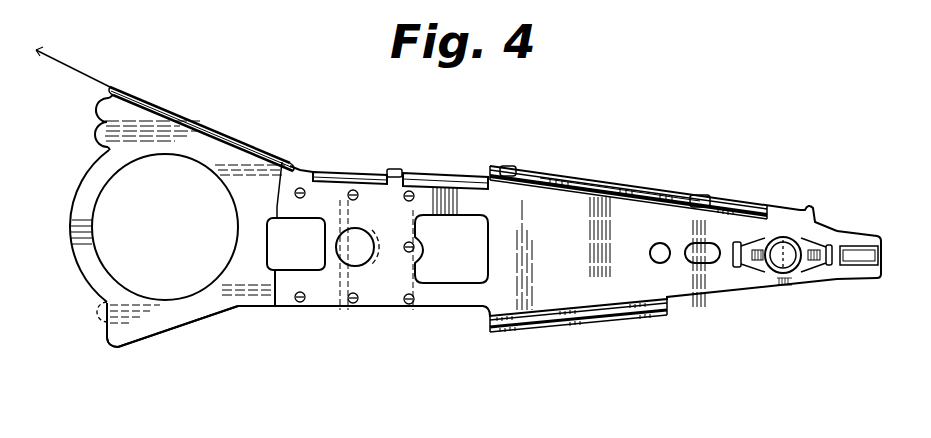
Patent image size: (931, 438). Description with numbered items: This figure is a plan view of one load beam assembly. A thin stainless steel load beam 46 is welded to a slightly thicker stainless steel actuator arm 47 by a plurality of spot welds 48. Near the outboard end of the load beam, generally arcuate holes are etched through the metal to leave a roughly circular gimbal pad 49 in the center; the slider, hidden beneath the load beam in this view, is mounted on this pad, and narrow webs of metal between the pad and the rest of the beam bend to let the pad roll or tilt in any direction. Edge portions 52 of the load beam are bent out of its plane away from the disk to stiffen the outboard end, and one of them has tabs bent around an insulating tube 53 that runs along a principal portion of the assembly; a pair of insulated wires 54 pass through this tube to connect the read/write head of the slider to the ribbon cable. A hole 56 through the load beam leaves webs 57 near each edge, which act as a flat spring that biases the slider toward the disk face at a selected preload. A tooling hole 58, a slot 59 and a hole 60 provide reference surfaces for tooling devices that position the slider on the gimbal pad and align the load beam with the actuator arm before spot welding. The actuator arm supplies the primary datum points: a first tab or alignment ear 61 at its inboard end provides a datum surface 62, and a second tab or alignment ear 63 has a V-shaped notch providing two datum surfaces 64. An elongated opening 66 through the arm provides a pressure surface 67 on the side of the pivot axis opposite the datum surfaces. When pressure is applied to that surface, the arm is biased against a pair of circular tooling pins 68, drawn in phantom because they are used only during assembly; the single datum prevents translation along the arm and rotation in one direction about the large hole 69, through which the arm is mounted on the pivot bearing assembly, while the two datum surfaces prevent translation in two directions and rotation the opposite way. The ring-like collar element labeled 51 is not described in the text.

The load beam 46 is at (543, 210).
The actuator arm 47 is at (200, 320).
The spot welds 48 is at (350, 193).
The gimbal pad 49 is at (783, 255).
The collar ring 51 is at (783, 240).
The edge portions 52 is at (610, 190).
The insulating tube 53 is at (462, 172).
The insulated wires 54 is at (103, 83).
The hole 56 is at (432, 270).
The webs 57 is at (423, 198).
The tooling hole 58 is at (352, 268).
The slot 59 is at (707, 265).
The hole 60 is at (660, 243).
The first tab or alignment ear 61 is at (117, 345).
The datum surface 62 is at (107, 330).
The second tab or alignment ear 63 is at (95, 103).
The datum surfaces 64 is at (98, 135).
The elongated opening 66 is at (266, 272).
The pressure surface 67 is at (280, 250).
The tooling pins 68 is at (143, 97).
The large hole 69 is at (177, 173).